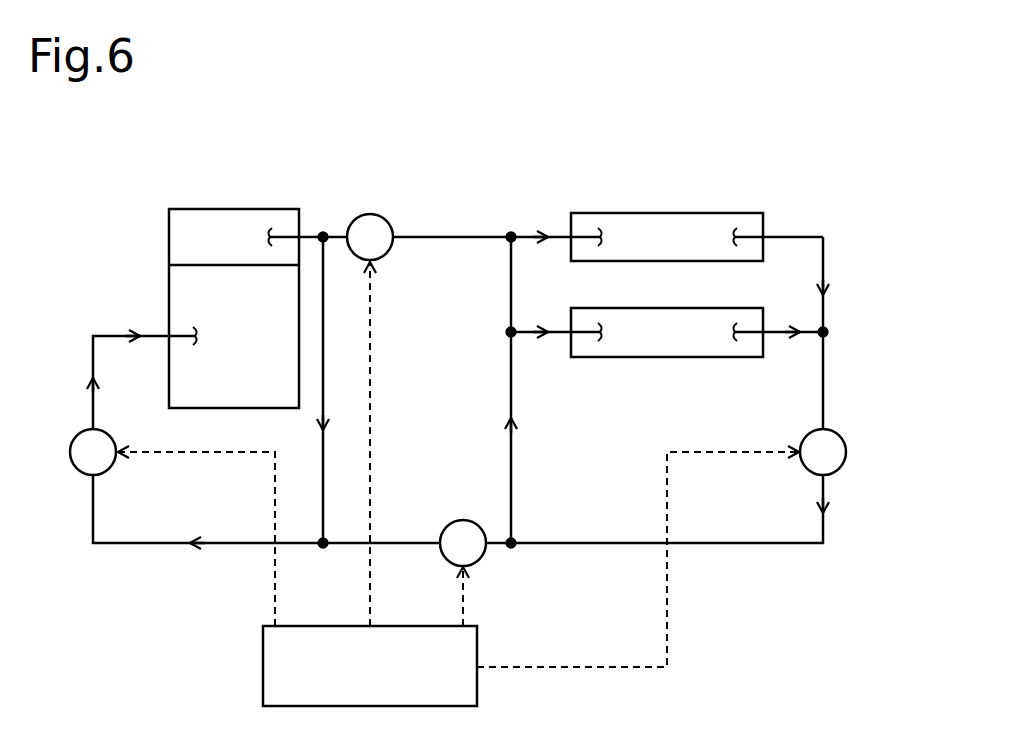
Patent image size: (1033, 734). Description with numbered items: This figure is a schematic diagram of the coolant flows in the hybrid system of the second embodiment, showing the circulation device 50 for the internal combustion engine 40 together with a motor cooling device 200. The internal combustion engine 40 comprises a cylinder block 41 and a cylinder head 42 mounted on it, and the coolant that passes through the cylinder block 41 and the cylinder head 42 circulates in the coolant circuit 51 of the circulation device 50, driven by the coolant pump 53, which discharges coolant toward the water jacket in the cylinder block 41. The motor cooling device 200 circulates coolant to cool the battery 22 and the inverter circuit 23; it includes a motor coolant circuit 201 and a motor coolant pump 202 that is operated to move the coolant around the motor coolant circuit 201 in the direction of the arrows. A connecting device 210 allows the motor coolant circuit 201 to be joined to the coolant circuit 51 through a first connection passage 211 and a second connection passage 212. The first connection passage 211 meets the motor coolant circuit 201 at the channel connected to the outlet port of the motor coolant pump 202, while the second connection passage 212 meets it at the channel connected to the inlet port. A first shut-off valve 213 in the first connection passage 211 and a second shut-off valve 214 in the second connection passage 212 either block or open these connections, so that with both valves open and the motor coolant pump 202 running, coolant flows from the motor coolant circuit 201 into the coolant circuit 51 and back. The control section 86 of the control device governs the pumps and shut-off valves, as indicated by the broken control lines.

The internal combustion engine 40 is at (236, 253).
The cylinder block 41 is at (169, 293).
The cylinder head 42 is at (169, 233).
The circulation device 50 is at (92, 564).
The coolant circuit 51 is at (93, 355).
The coolant pump 53 is at (69, 453).
The battery 22 is at (672, 357).
The inverter circuit 23 is at (672, 213).
The control section 86 is at (263, 672).
The motor cooling device 200 is at (716, 369).
The motor coolant circuit 201 is at (826, 304).
The motor coolant pump 202 is at (846, 448).
The connecting device 210 is at (419, 336).
The first connection passage 211 is at (405, 543).
The second connection passage 212 is at (440, 237).
The first shut-off valve 213 is at (463, 520).
The second shut-off valve 214 is at (370, 214).